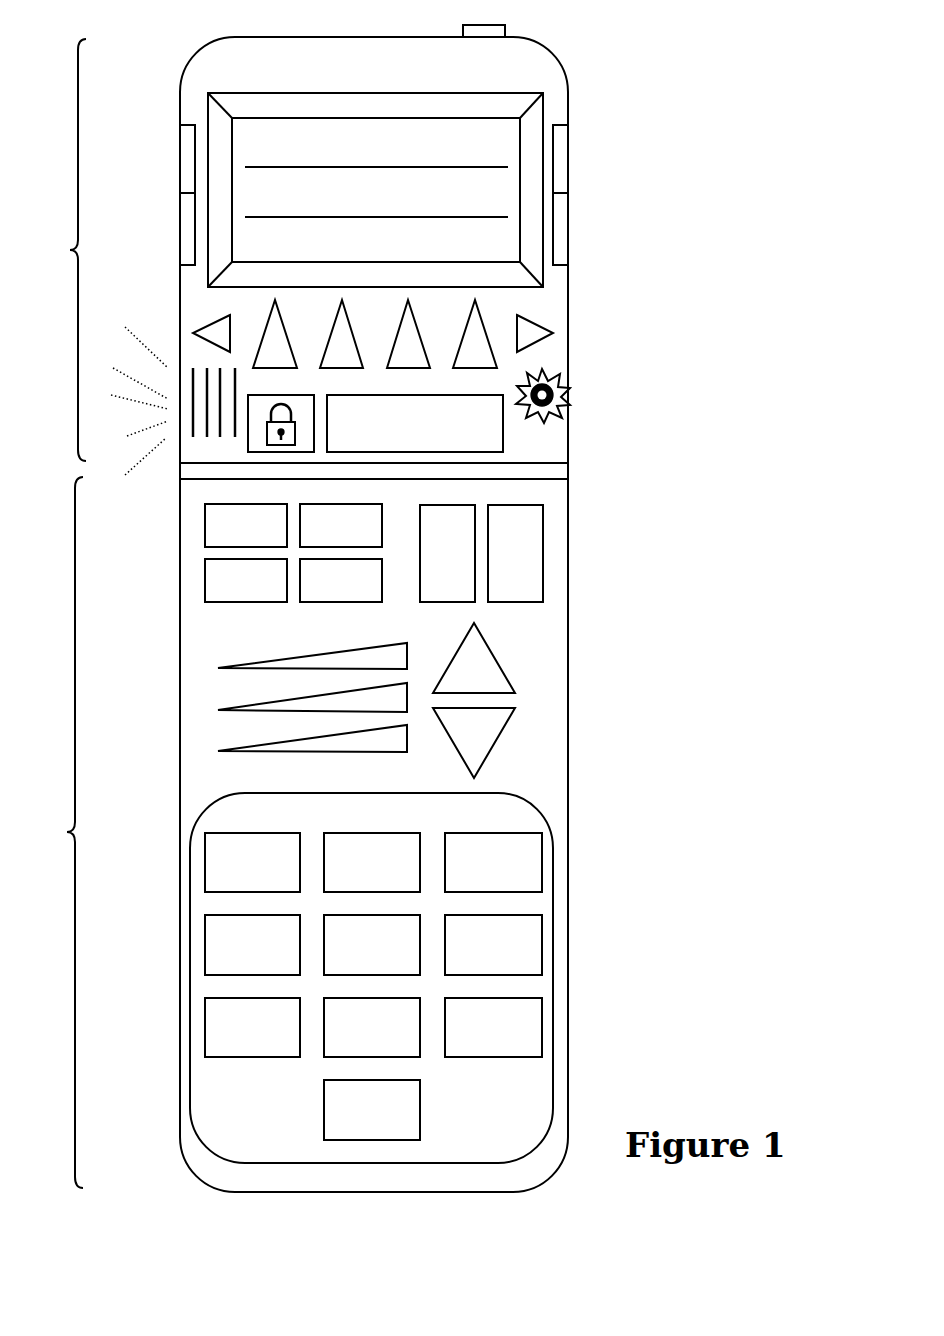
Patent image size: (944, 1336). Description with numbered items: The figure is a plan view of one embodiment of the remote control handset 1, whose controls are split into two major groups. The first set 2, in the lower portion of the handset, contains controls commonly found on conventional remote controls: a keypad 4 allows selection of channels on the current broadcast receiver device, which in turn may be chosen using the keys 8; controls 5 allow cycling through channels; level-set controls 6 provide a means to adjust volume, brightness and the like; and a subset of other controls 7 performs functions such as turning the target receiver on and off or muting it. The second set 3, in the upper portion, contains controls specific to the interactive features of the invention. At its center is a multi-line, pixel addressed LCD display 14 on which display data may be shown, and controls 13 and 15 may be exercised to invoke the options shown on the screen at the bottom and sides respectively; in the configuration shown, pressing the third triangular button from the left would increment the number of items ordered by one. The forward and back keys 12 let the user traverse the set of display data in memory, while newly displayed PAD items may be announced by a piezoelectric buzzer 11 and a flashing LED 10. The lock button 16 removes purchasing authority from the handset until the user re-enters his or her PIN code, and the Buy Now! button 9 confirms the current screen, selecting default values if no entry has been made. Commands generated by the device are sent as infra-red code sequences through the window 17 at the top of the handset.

The remote control handset 1 is at (567, 1003).
The first set of controls 2 is at (55, 832).
The second set of controls 3 is at (58, 250).
The keypad 4 is at (542, 907).
The channel cycling controls 5 is at (528, 693).
The level-set controls 6 is at (395, 637).
The other controls 7 is at (555, 545).
The receiver selection keys 8 is at (395, 508).
The Buy Now! button 9 is at (510, 428).
The flashing LED 10 is at (578, 375).
The piezoelectric buzzer 11 is at (193, 362).
The forward and back keys 12 is at (200, 310).
The bottom option controls 13 is at (433, 305).
The LCD display 14 is at (513, 195).
The side option controls 15 is at (181, 168).
The lock button 16 is at (258, 458).
The window 17 is at (492, 40).